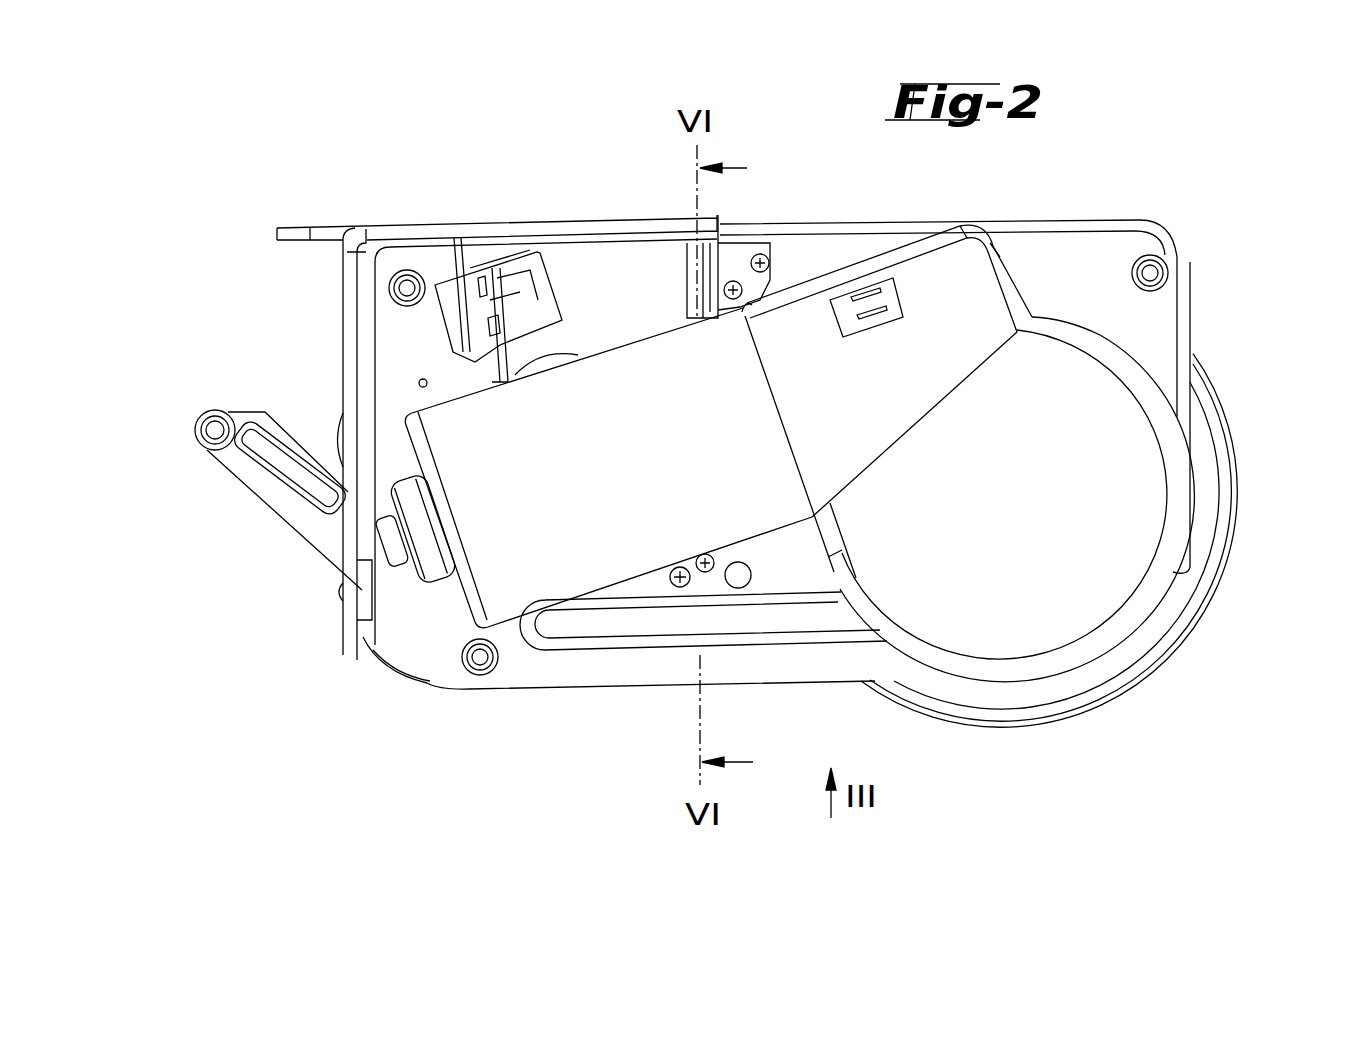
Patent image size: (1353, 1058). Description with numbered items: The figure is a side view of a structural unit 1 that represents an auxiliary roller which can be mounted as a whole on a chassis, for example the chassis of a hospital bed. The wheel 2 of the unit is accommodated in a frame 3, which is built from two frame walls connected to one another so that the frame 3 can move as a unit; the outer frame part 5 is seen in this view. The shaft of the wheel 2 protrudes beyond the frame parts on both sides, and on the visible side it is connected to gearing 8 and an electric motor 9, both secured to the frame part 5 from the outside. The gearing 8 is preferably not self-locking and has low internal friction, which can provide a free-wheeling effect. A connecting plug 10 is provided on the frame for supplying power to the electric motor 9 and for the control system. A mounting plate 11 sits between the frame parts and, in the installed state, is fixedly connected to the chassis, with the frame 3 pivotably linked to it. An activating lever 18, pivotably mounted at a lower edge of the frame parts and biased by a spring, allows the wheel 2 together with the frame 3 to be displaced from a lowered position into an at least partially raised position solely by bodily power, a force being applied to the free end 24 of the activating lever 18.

The structural unit 1 is at (1150, 203).
The wheel 2 is at (1207, 478).
The frame 3 is at (1192, 657).
The frame part 5 is at (1143, 337).
The gearing 8 is at (1057, 638).
The electric motor 9 is at (583, 548).
The connecting plug 10 is at (515, 285).
The mounting plate 11 is at (565, 227).
The activating lever 18 is at (290, 513).
The free end 24 is at (197, 413).